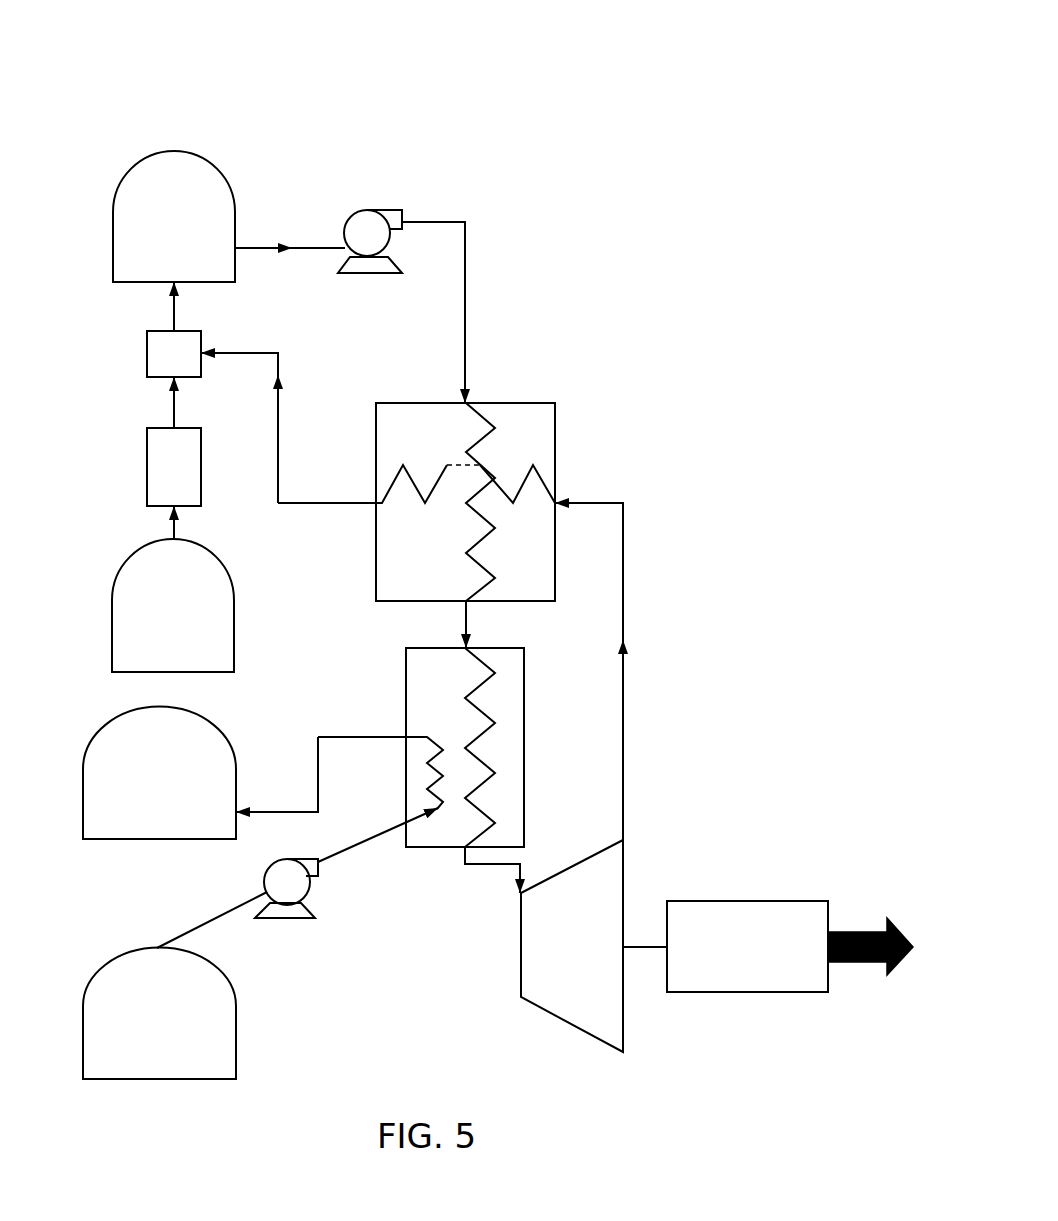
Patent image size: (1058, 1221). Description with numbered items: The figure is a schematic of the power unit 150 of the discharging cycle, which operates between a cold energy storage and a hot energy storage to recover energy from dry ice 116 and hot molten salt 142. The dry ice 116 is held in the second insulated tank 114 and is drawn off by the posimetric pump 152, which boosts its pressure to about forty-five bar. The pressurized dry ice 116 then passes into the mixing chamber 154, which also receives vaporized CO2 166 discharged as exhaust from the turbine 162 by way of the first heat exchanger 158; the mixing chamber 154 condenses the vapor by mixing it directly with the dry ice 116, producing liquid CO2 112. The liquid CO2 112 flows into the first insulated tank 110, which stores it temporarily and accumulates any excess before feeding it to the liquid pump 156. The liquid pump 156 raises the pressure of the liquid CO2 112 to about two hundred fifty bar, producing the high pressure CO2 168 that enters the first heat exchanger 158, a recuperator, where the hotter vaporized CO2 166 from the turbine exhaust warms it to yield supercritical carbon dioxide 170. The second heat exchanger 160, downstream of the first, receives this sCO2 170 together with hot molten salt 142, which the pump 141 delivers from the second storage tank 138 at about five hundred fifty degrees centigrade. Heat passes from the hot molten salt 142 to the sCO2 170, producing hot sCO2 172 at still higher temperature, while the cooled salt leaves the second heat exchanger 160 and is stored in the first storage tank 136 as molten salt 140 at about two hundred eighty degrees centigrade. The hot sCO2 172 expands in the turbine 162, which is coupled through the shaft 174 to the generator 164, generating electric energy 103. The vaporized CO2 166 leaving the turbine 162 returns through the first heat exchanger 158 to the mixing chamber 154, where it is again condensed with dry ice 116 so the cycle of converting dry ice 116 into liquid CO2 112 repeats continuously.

The power unit 150 is at (741, 63).
The first insulated tank 110 is at (218, 160).
The liquid CO2 112 is at (183, 234).
The liquid pump 156 is at (386, 210).
The mixing chamber 154 is at (146, 354).
The posimetric pump 152 is at (146, 466).
The dry ice 116 is at (166, 384).
The second insulated tank 114 is at (237, 632).
The vaporized CO2 166 is at (284, 378).
The first heat exchanger 158 is at (558, 430).
The high pressure CO2 168 is at (474, 397).
The supercritical carbon dioxide 170 is at (474, 642).
The second heat exchanger 160 is at (527, 746).
The first storage tank 136 is at (222, 730).
The molten salt 140 is at (152, 800).
The pump 141 is at (306, 921).
The hot molten salt 142 is at (156, 1015).
The second storage tank 138 is at (238, 1040).
The hot sCO2 172 is at (516, 890).
The turbine 162 is at (566, 1026).
The shaft 174 is at (631, 942).
The generator 164 is at (750, 900).
The electric energy 103 is at (875, 965).